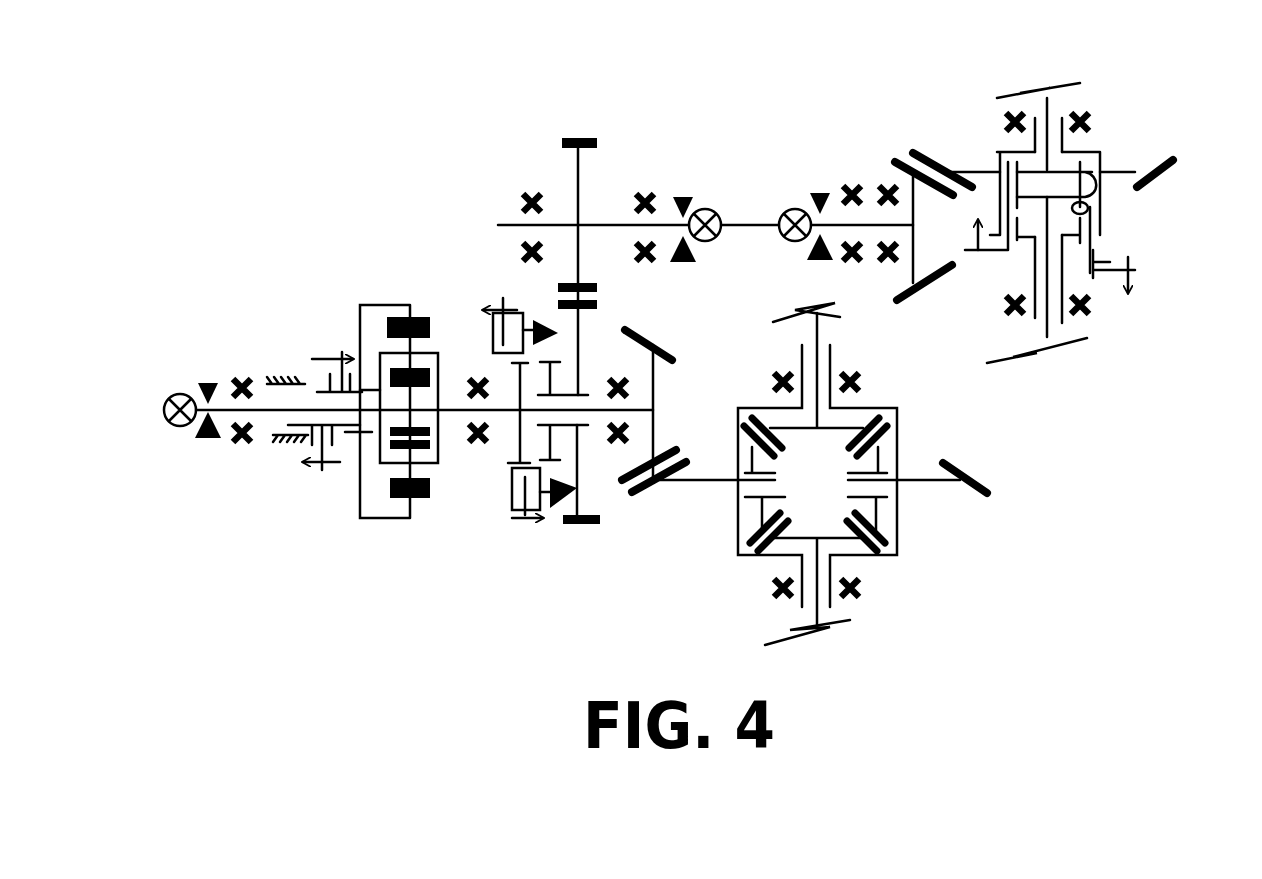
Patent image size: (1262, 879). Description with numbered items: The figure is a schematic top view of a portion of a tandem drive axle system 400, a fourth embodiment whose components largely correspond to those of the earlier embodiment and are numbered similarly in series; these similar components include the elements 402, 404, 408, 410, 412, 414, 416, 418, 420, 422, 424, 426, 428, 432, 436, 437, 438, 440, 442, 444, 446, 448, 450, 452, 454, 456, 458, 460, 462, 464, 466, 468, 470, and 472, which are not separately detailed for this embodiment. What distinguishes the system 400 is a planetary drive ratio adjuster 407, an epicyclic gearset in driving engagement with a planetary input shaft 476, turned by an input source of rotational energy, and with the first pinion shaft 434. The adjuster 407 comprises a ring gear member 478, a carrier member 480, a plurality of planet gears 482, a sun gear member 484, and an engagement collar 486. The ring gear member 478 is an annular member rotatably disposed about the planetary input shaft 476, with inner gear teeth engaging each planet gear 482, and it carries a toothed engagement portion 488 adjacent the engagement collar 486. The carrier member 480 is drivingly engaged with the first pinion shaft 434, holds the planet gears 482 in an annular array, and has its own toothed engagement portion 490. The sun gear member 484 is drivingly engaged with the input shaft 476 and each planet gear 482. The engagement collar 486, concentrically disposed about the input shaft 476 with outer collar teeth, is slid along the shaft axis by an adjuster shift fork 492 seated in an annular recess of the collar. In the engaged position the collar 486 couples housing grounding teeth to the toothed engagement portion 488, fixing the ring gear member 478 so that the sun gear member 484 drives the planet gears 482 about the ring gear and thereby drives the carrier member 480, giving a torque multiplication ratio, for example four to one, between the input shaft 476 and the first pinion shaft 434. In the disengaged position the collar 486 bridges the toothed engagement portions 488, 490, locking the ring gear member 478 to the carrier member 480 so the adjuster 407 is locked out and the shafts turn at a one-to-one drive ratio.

The tandem drive axle system 400 is at (262, 85).
The transmission 402 is at (433, 635).
The planetary gear unit 404 is at (867, 90).
The planetary drive ratio adjuster 407 is at (342, 250).
The bearing 408 is at (650, 187).
The intermediate shaft 410 is at (654, 388).
The output shaft 412 is at (927, 482).
The differential housing 414 is at (897, 548).
The side gear 416 is at (855, 473).
The pinion gear 418 is at (782, 428).
The axle shaft 420 is at (820, 342).
The wheel end 422 is at (820, 322).
The connecting shaft 424 is at (743, 225).
The gear 426 is at (580, 347).
The clutch actuator 428 is at (512, 493).
The shift fork 432 is at (518, 433).
The first pinion shaft 434 is at (640, 410).
The countershaft 436 is at (583, 167).
The coupling 437 is at (786, 234).
The transfer shaft 438 is at (923, 233).
The shift fork 440 is at (552, 381).
The gear 442 is at (592, 527).
The synchronizer clutch 444 is at (560, 332).
The actuator 446 is at (560, 505).
The actuator 448 is at (517, 522).
The output gear 450 is at (1140, 170).
The rotation direction 452 is at (1105, 212).
The brake 454 is at (1095, 250).
The planet gear 456 is at (1063, 148).
The shaft 458 is at (1063, 88).
The actuator 460 is at (1030, 268).
The planetary gear set 462 is at (1105, 225).
The ring gear 464 is at (1076, 184).
The bearing 466 is at (1093, 302).
The carrier 468 is at (1000, 155).
The actuation direction 470 is at (1138, 277).
The sun gear 472 is at (1071, 213).
The planetary input shaft 476 is at (268, 413).
The ring gear member 478 is at (387, 520).
The carrier member 480 is at (443, 463).
The planet gears 482 is at (408, 340).
The sun gear member 484 is at (390, 405).
The engagement collar 486 is at (337, 385).
The toothed engagement portion 488 is at (358, 433).
The toothed engagement portion 490 is at (392, 410).
The adjuster shift fork 492 is at (340, 372).